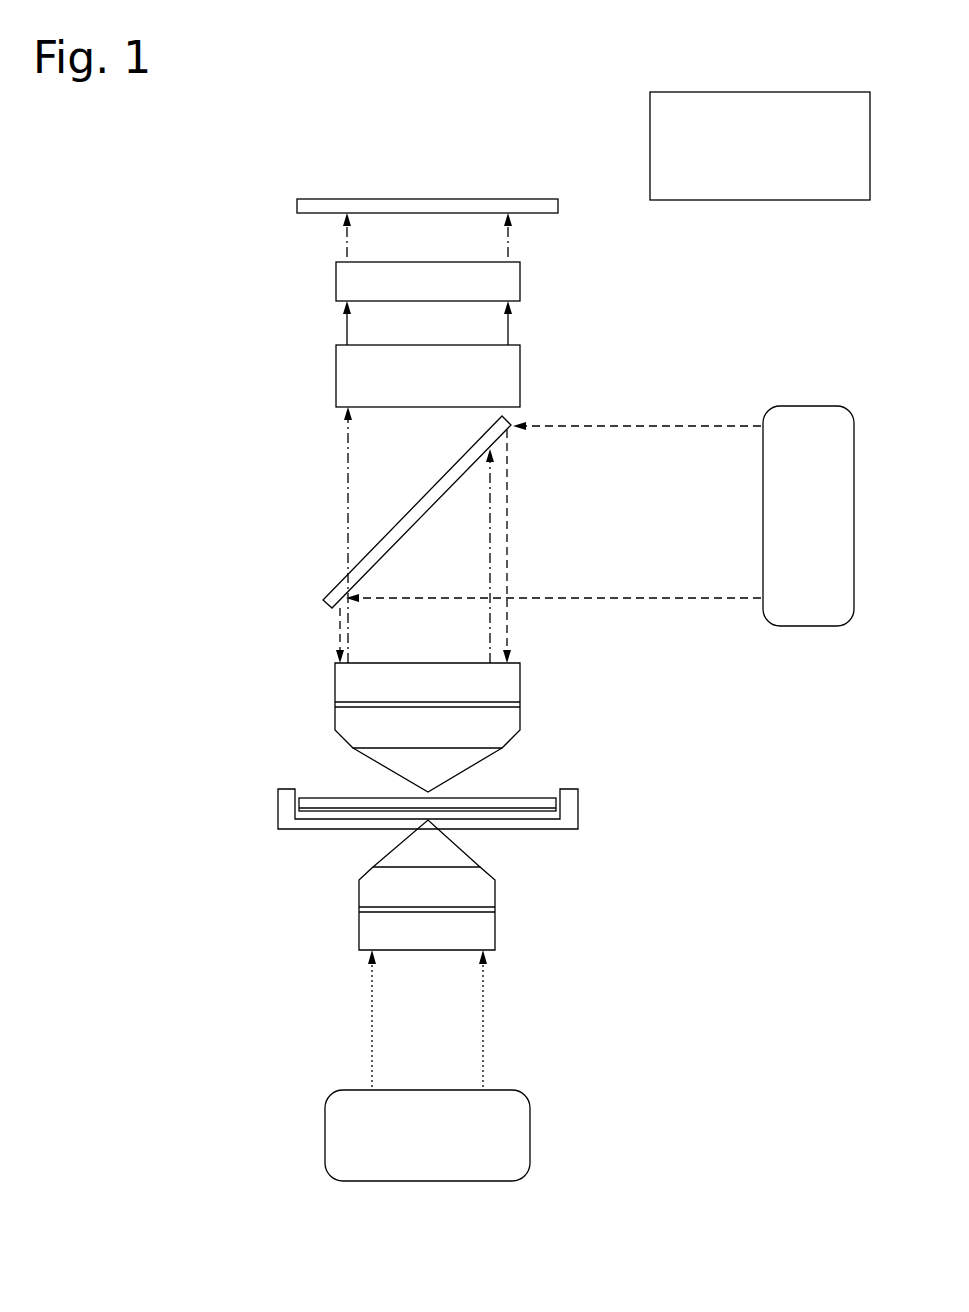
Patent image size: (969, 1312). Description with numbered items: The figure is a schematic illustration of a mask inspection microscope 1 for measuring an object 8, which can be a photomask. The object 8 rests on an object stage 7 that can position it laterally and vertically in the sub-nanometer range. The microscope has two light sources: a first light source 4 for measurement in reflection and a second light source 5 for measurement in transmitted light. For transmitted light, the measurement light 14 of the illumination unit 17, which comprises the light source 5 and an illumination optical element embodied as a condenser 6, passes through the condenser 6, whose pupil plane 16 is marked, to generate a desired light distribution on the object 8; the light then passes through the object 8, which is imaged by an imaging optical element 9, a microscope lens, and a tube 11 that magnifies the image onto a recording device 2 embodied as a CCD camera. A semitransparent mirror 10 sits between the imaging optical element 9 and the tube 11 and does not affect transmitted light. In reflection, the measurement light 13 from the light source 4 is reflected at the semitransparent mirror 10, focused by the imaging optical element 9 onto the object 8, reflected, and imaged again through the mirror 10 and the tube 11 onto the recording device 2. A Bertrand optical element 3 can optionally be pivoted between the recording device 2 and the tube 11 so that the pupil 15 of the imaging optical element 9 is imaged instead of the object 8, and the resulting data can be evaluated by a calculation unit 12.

The mask inspection microscope 1 is at (247, 162).
The recording device 2 is at (300, 206).
The Bertrand optical element 3 is at (347, 281).
The first light source 4 is at (836, 522).
The second light source 5 is at (325, 1140).
The condenser 6 is at (483, 926).
The object stage 7 is at (288, 807).
The object 8 is at (543, 806).
The imaging optical element 9 is at (502, 720).
The semitransparent mirror 10 is at (397, 530).
The tube 11 is at (347, 378).
The calculation unit 12 is at (772, 190).
The measurement light 13 is at (635, 424).
The measurement light 14 is at (366, 1020).
The pupil 15 is at (353, 702).
The pupil plane 16 is at (375, 905).
The illumination unit 17 is at (538, 988).